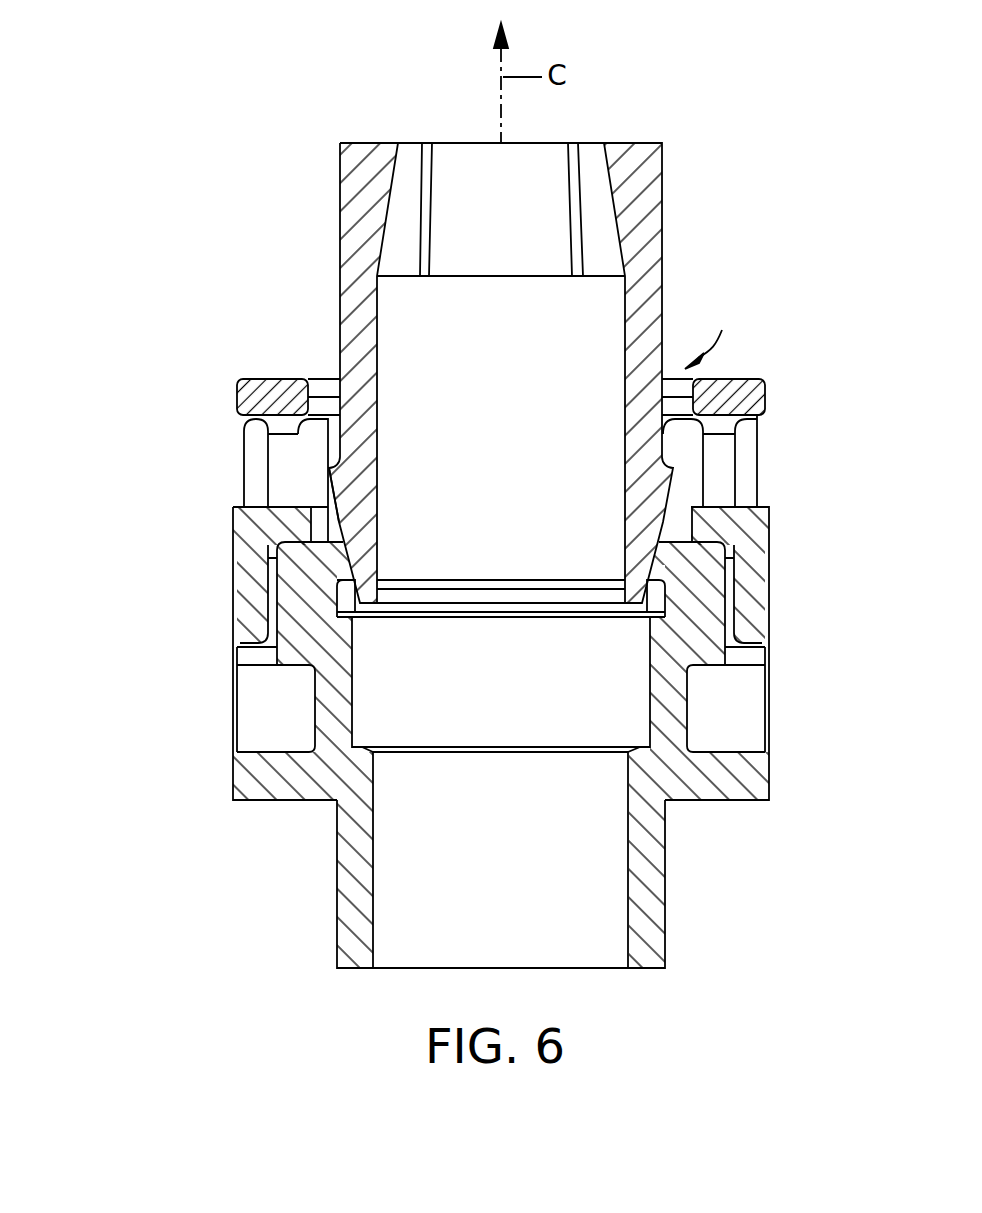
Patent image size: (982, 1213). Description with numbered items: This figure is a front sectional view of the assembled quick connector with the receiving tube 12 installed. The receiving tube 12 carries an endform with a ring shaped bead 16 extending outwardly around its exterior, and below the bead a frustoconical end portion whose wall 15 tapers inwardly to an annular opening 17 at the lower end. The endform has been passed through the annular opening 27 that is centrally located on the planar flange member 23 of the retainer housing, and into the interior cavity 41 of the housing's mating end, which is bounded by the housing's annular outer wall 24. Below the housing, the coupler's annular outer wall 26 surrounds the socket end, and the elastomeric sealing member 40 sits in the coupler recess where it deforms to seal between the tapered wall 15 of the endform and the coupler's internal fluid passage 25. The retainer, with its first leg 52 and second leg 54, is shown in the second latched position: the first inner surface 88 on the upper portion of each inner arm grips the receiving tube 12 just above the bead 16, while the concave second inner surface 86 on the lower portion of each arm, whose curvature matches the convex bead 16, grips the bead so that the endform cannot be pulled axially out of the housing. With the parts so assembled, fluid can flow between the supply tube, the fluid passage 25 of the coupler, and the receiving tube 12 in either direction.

The receiving tube 12 is at (345, 207).
The wall of the frustoconical end portion 15 is at (338, 533).
The bead 16 is at (335, 482).
The annular opening 17 is at (542, 605).
The flange member 23 is at (750, 379).
The outer wall of the retainer housing 24 is at (769, 547).
The fluid passage 25 is at (370, 715).
The outer wall of the coupler 26 is at (707, 602).
The annular opening 27 is at (724, 343).
The sealing member 40 is at (333, 572).
The interior cavity 41 is at (677, 518).
The first leg 52 is at (758, 441).
The second leg 54 is at (252, 434).
The second inner surface 86 is at (308, 495).
The first inner surface 88 is at (327, 430).